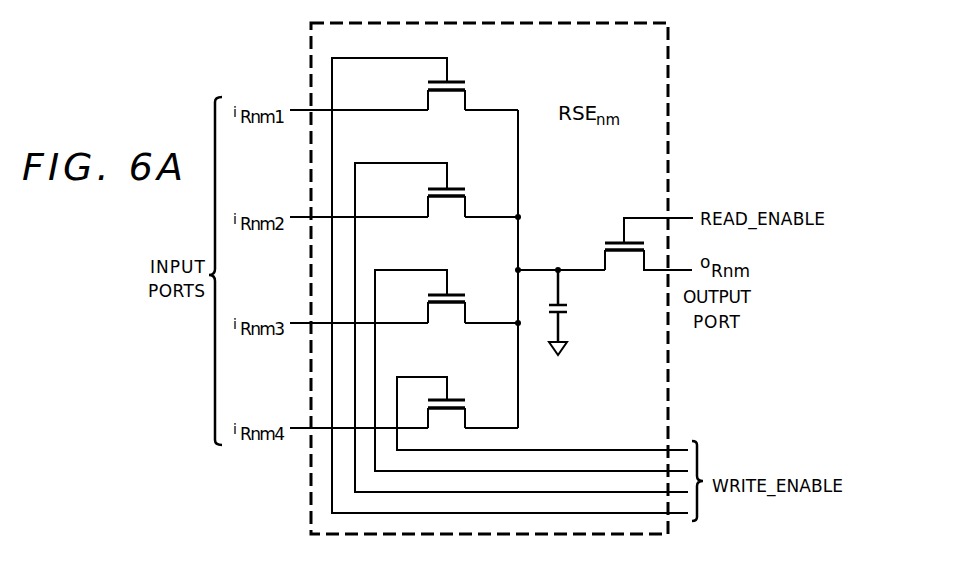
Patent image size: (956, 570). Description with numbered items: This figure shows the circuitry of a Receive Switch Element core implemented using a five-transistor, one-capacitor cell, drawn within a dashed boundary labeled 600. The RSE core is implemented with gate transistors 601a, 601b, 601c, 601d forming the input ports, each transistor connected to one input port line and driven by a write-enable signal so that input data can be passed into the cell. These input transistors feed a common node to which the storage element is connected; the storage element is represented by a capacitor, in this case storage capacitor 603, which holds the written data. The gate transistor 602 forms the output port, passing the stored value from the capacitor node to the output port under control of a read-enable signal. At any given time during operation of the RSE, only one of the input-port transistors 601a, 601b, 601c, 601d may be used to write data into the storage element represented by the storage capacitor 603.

The register storage element 600 is at (309, 70).
The gate transistor 601a is at (454, 82).
The gate transistor 601b is at (454, 189).
The gate transistor 601c is at (454, 295).
The gate transistor 601d is at (454, 400).
The gate transistor 602 is at (607, 243).
The storage capacitor 603 is at (569, 309).